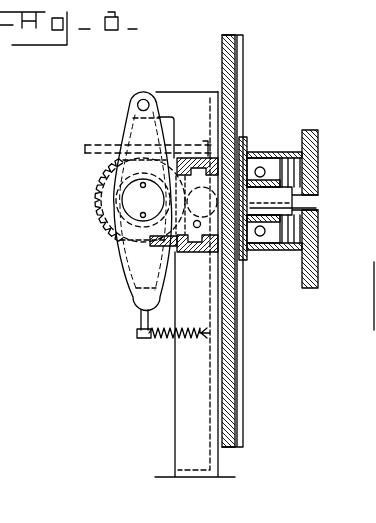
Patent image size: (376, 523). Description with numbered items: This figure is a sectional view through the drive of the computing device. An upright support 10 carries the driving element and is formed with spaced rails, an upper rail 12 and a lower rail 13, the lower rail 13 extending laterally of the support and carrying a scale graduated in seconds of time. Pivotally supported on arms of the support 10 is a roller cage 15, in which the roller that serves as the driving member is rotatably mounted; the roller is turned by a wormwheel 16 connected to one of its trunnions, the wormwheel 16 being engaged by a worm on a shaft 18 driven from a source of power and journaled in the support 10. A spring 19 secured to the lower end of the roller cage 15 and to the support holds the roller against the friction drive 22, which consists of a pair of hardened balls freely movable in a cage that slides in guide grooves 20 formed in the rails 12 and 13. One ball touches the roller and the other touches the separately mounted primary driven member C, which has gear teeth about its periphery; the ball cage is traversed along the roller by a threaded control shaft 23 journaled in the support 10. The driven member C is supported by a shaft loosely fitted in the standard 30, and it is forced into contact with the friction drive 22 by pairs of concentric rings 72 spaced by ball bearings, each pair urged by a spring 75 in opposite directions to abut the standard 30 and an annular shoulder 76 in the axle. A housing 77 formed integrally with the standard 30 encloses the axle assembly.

The upright support 10 is at (180, 437).
The rail 12 is at (196, 157).
The lower rail 13 is at (165, 244).
The roller cage 15 is at (132, 128).
The wormwheel 16 is at (103, 213).
The shaft 18 is at (83, 146).
The spring 19 is at (160, 338).
The guide grooves 20 is at (189, 157).
The friction drive 22 is at (170, 201).
The threaded control shaft 23 is at (196, 228).
The standard 30 is at (295, 209).
The concentric rings 72 is at (267, 252).
The spring 75 is at (290, 256).
The annular shoulder 76 is at (375, 284).
The housing 77 is at (266, 152).
The primary driven member C is at (237, 348).